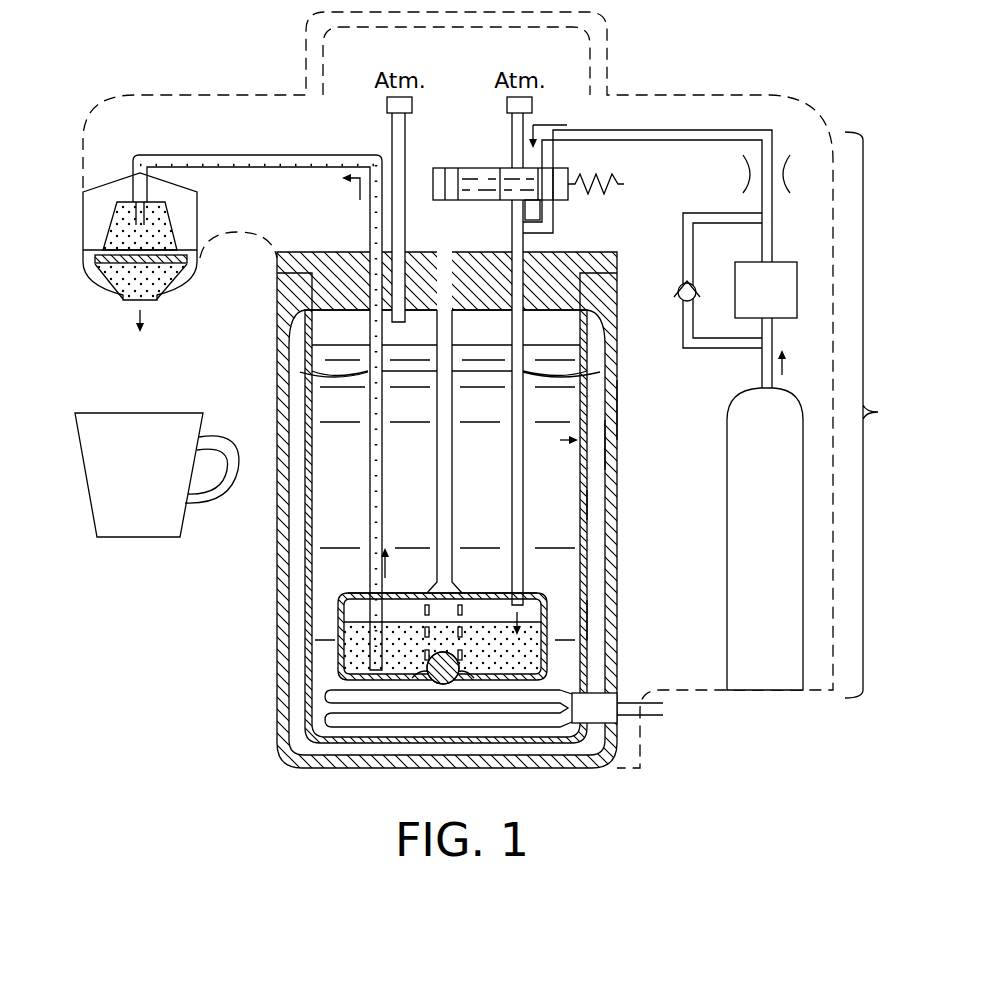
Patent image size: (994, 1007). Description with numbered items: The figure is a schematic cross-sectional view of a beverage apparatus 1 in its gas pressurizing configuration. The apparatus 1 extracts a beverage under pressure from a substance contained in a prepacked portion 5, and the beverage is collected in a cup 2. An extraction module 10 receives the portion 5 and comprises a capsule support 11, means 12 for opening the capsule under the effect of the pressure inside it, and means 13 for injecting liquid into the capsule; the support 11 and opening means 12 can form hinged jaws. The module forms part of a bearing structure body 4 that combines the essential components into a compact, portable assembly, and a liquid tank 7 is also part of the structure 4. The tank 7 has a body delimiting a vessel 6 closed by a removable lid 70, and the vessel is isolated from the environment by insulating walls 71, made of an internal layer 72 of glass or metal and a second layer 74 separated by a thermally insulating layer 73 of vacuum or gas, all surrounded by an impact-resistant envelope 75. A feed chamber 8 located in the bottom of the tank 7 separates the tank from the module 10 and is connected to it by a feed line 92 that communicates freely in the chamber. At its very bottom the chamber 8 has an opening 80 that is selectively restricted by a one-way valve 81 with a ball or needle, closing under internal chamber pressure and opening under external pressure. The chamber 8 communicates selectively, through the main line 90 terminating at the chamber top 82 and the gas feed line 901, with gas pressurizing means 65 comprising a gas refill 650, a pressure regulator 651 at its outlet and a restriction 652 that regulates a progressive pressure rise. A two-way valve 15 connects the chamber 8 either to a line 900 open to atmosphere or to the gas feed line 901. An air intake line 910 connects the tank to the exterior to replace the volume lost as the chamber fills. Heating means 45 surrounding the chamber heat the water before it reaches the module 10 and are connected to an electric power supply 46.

The apparatus 1 is at (712, 745).
The cup 2 is at (140, 540).
The bearing structure body 4 is at (774, 96).
The prepacked portion 5 is at (112, 232).
The vessel 6 is at (325, 523).
The liquid tank 7 is at (266, 735).
The feed chamber 8 is at (326, 610).
The extraction module 10 is at (83, 173).
The capsule support 11 is at (160, 283).
The capsule opening means 12 is at (187, 262).
The liquid injection means 13 is at (188, 203).
The valve 15 is at (465, 162).
The heating means 45 is at (358, 720).
The electric power supply 46 is at (632, 724).
The gas pressurizing means 65 is at (876, 415).
The lid 70 is at (610, 252).
The insulating walls 71 is at (617, 443).
The internal layer 72 is at (592, 558).
The thermally insulating layer 73 is at (600, 508).
The second glass or metal layer 74 is at (588, 620).
The impact-resistant envelope 75 is at (617, 410).
The opening 80 is at (443, 684).
The one-way valve 81 is at (478, 675).
The chamber top 82 is at (547, 596).
The main line 90 is at (600, 372).
The feed line 92 is at (300, 372).
The gas refill 650 is at (765, 690).
The pressure regulator 651 is at (790, 262).
The restriction 652 is at (742, 175).
The atmospheric line 900 is at (527, 118).
The gas feed line 901 is at (688, 130).
The air intake line 910 is at (392, 118).